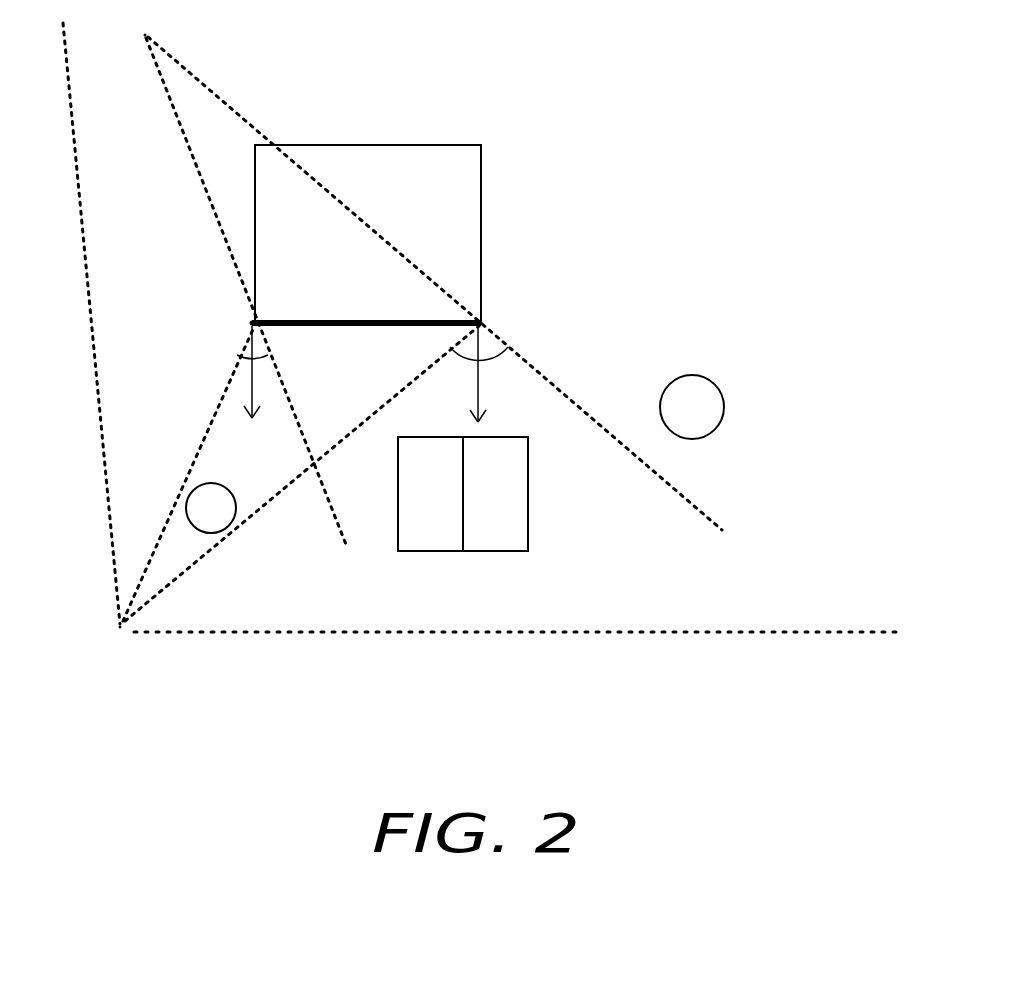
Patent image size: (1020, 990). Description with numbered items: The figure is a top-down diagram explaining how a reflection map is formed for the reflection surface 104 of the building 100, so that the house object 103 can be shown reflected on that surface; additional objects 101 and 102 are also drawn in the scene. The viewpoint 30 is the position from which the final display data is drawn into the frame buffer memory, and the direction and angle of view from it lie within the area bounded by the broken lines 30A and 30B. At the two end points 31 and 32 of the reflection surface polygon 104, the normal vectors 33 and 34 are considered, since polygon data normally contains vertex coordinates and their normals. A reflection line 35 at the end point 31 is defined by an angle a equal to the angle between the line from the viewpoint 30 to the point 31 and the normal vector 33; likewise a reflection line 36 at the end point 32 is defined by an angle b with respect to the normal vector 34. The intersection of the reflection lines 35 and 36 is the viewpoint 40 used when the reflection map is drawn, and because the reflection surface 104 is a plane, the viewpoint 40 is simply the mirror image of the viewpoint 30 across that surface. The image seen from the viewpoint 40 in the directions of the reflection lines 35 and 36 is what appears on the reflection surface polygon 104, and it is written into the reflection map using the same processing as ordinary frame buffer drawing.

The viewpoint 30 is at (119, 627).
The broken line 30A is at (89, 312).
The broken line 30B is at (651, 635).
The end point 31 is at (239, 325).
The end point 32 is at (501, 313).
The normal vector 33 is at (252, 389).
The normal vector 34 is at (486, 382).
The reflection line 35 is at (206, 208).
The reflection line 36 is at (530, 373).
The viewpoint 40 is at (143, 34).
The building 100 is at (354, 145).
The object 101 is at (226, 491).
The object 102 is at (722, 394).
The house object 103 is at (529, 491).
The reflection surface polygon 104 is at (352, 323).